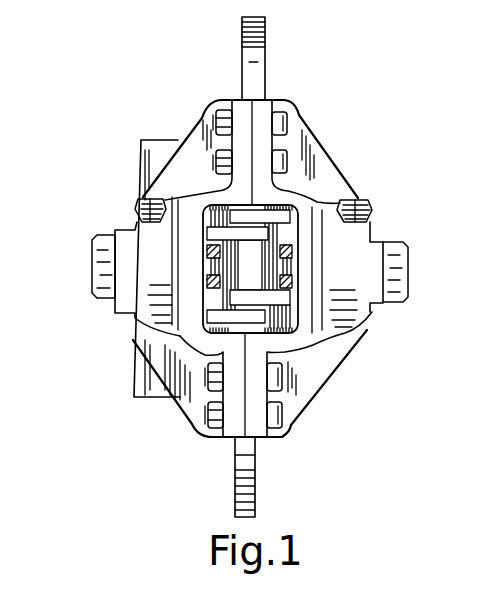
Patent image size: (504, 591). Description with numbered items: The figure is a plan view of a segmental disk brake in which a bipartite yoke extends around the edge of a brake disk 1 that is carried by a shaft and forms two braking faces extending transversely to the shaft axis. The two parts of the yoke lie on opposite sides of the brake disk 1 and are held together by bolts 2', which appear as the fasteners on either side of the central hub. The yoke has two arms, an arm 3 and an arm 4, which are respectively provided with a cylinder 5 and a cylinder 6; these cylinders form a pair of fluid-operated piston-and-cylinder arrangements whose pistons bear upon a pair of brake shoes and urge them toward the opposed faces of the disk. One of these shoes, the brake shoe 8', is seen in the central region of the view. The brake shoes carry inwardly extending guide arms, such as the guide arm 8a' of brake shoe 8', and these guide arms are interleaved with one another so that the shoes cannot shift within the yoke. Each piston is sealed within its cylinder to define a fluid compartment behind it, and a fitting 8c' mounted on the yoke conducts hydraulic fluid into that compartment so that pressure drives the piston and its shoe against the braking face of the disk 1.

The brake disk 1 is at (265, 28).
The bolts 2' is at (277, 269).
The arm of the yoke 3 is at (323, 163).
The arm of the yoke 4 is at (197, 140).
The cylinder 5 is at (357, 323).
The cylinder 6 is at (143, 317).
The brake shoe 8' is at (273, 273).
The guide arm 8a' is at (299, 257).
The fitting 8c' is at (386, 205).